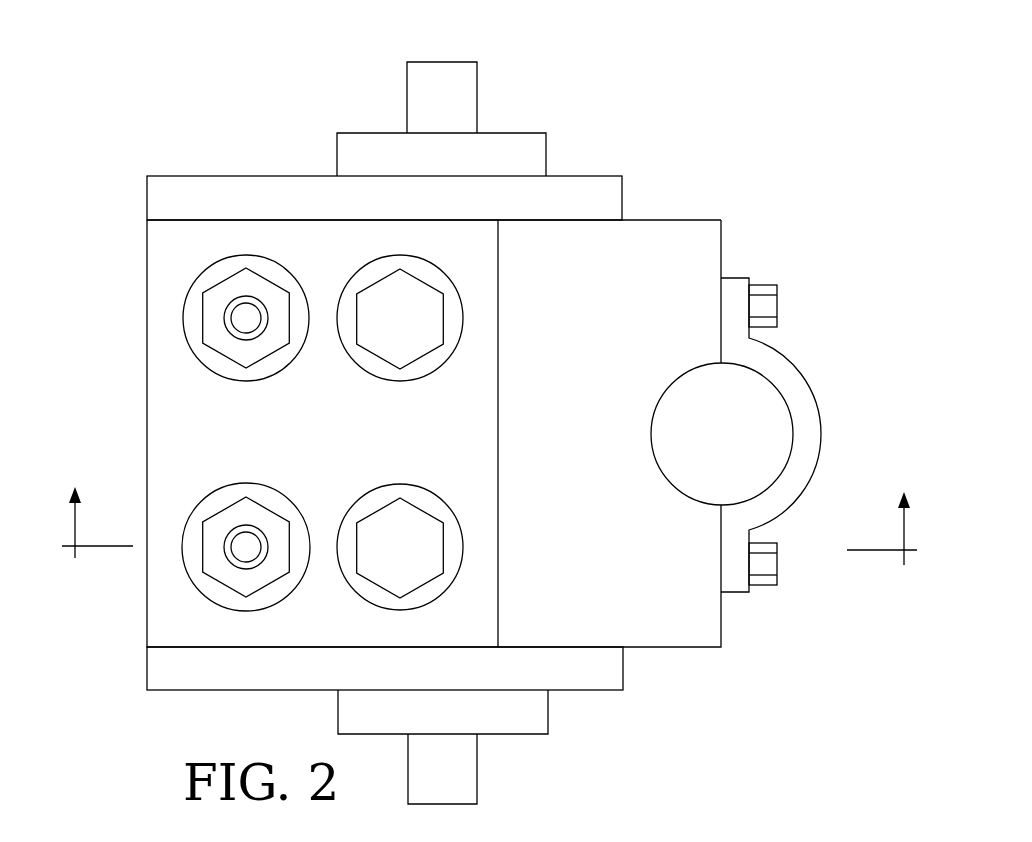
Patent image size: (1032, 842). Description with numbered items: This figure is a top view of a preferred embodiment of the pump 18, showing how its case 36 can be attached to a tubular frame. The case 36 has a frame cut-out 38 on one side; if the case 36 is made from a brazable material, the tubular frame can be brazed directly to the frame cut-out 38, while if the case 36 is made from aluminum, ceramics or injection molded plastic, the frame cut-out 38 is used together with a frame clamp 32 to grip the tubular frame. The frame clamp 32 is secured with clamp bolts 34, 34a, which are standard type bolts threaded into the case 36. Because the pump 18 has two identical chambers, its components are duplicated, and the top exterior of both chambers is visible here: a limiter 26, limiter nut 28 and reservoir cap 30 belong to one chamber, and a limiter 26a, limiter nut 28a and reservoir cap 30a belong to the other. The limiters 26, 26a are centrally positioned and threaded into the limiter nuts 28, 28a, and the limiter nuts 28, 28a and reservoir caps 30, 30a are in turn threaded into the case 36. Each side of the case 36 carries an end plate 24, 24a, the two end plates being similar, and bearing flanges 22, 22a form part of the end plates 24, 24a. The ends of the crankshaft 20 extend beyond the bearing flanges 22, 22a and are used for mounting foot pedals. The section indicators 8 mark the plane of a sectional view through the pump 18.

The section line 8- 8 is at (489, 544).
The pump 18 is at (114, 188).
The crankshaft 20 is at (477, 78).
The bearing flange 22 is at (548, 722).
The bearing flange 22a is at (546, 148).
The end plate 24 is at (623, 679).
The end plate 24a is at (622, 193).
The limiter 26 is at (242, 542).
The limiter 26a is at (243, 322).
The limiter nut 28 is at (277, 527).
The limiter nut 28a is at (273, 338).
The reservoir cap 30 is at (420, 525).
The reservoir cap 30a is at (420, 335).
The frame clamp 32 is at (803, 398).
The clamp bolt 34 is at (777, 563).
The clamp bolt 34a is at (777, 312).
The case 36 is at (703, 629).
The frame cut-out 38 is at (652, 447).